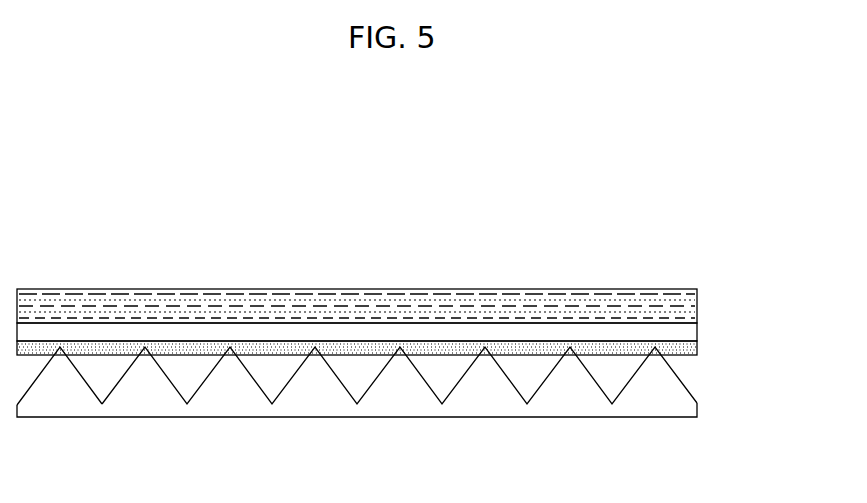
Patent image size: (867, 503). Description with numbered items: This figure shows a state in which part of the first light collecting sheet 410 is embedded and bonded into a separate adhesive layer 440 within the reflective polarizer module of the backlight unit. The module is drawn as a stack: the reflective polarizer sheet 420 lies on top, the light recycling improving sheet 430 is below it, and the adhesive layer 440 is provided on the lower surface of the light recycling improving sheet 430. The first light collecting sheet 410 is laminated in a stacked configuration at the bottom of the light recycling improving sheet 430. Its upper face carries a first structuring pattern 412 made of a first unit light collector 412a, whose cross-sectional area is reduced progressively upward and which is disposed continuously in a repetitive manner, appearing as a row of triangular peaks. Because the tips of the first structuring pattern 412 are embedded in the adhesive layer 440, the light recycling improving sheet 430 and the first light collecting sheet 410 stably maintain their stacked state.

The first light collecting sheet 410 is at (398, 419).
The first structuring pattern 412 is at (398, 419).
The first unit light collector 412a is at (65, 377).
The reflective polarizer sheet 420 is at (677, 308).
The light recycling improving sheet 430 is at (677, 333).
The adhesive layer 440 is at (677, 352).